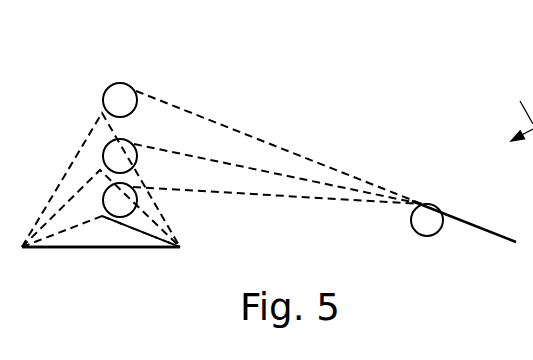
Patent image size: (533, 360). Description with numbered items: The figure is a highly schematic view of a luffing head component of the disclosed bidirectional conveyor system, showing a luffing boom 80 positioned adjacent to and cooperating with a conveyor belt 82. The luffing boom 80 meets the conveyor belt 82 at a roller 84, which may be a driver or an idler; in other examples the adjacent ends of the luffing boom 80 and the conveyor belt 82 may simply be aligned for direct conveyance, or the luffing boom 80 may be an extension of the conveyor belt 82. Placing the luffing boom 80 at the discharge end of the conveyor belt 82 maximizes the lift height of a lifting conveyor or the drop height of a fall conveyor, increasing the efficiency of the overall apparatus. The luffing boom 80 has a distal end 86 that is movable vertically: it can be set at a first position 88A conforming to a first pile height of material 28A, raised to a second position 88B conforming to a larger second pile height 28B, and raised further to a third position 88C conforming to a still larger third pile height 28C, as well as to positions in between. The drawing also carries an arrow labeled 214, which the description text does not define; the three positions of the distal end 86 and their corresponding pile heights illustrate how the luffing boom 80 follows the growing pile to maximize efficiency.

The first pile height of material 28A is at (89, 240).
The second pile height 28B is at (84, 199).
The third pile height 28C is at (92, 135).
The luffing boom 80 is at (137, 197).
The conveyor belt 82 is at (466, 216).
The roller 84 is at (413, 231).
The distal end 86 is at (120, 83).
The first position 88A is at (137, 240).
The second position 88B is at (137, 156).
The third position 88C is at (138, 93).
The direction of movement 214 is at (519, 110).